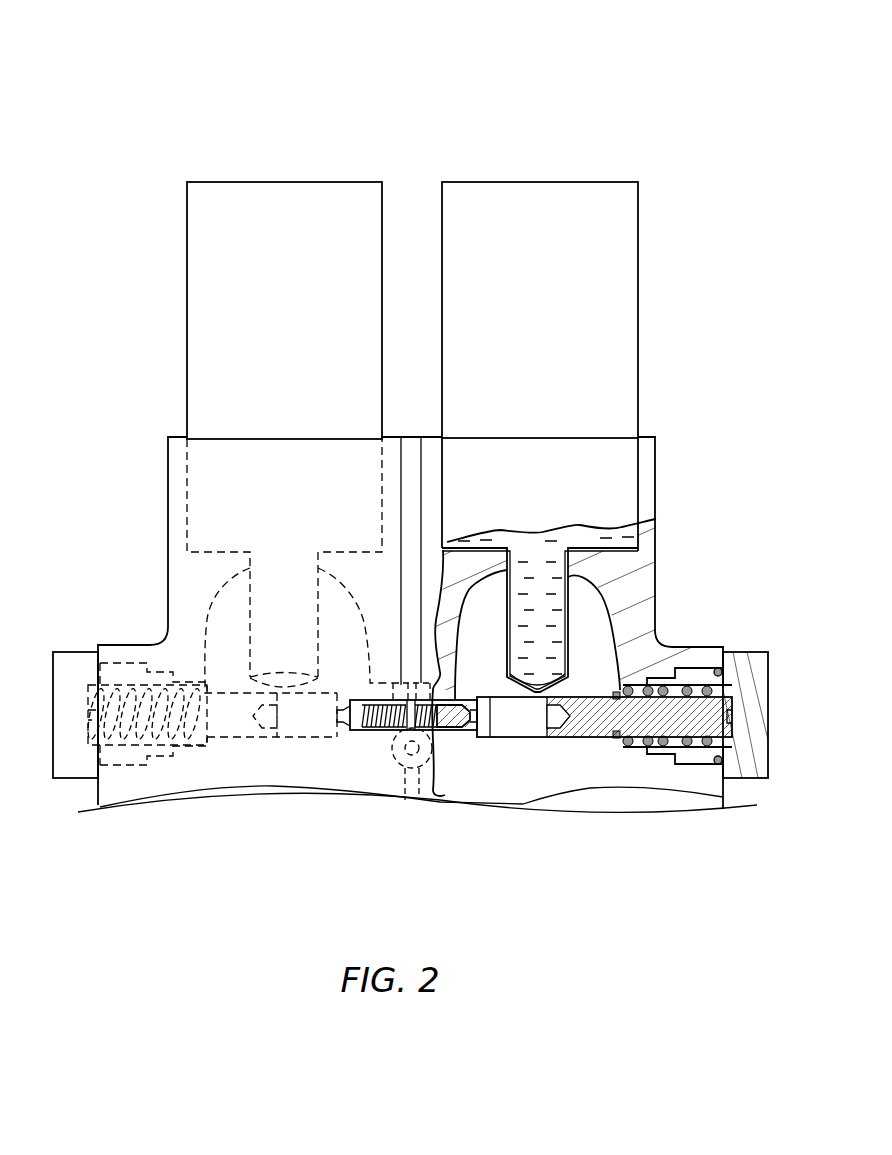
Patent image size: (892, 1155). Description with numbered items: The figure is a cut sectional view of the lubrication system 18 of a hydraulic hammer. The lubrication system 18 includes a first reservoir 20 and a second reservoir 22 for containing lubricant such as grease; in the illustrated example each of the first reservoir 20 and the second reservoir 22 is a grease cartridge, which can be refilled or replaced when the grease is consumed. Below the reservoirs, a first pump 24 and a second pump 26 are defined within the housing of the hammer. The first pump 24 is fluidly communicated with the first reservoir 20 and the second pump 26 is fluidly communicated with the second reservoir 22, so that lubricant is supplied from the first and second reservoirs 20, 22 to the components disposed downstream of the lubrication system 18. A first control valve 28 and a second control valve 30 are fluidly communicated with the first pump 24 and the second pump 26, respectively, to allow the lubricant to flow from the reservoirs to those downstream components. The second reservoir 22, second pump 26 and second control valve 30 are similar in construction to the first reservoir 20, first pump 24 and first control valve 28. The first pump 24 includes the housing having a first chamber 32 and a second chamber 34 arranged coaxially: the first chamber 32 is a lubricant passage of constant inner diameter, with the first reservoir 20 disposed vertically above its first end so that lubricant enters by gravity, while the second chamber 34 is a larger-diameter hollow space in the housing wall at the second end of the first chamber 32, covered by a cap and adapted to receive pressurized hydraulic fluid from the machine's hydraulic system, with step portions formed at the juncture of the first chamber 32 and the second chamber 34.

The lubrication system 18 is at (705, 75).
The first reservoir 20 is at (655, 300).
The second reservoir 22 is at (187, 322).
The first pump 24 is at (687, 770).
The second pump 26 is at (135, 770).
The first control valve 28 is at (456, 737).
The second control valve 30 is at (372, 737).
The first chamber 32 is at (288, 722).
The second chamber 34 is at (126, 690).